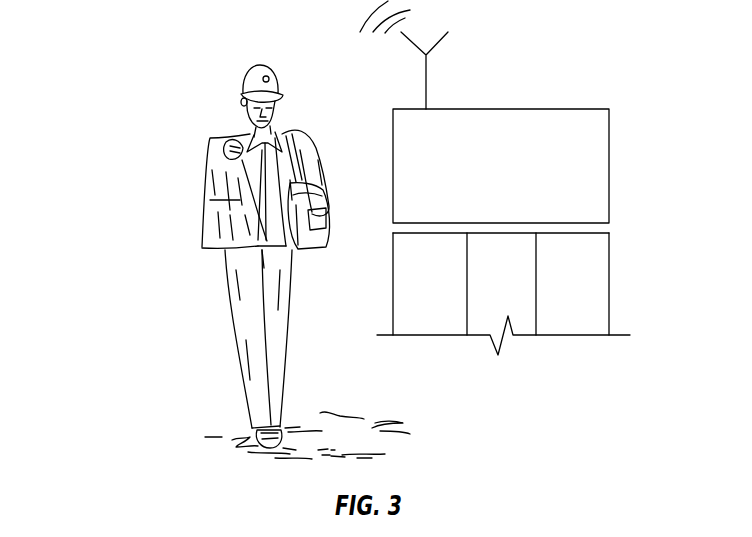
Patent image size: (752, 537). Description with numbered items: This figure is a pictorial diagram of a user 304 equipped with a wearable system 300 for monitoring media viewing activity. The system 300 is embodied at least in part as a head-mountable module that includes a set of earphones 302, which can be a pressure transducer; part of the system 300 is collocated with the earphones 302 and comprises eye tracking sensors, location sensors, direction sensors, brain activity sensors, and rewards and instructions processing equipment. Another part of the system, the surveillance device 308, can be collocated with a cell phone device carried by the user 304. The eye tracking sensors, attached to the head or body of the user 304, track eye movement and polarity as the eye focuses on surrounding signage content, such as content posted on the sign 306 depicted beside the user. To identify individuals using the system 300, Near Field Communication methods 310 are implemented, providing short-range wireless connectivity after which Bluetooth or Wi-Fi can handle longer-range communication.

The wearable system 300 is at (150, 70).
The earphones 302 is at (242, 101).
The user 304 is at (307, 142).
The sign 306 is at (610, 167).
The surveillance device 308 is at (317, 207).
The Near Field Communication methods 310 is at (426, 82).